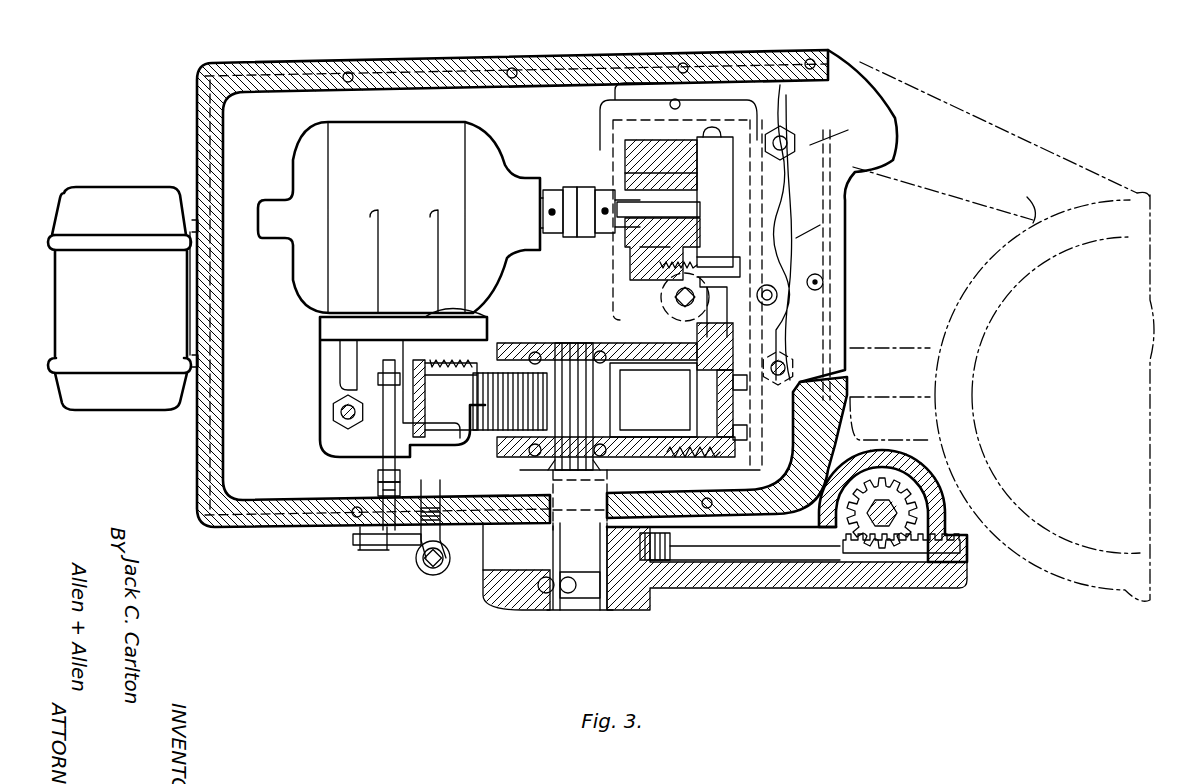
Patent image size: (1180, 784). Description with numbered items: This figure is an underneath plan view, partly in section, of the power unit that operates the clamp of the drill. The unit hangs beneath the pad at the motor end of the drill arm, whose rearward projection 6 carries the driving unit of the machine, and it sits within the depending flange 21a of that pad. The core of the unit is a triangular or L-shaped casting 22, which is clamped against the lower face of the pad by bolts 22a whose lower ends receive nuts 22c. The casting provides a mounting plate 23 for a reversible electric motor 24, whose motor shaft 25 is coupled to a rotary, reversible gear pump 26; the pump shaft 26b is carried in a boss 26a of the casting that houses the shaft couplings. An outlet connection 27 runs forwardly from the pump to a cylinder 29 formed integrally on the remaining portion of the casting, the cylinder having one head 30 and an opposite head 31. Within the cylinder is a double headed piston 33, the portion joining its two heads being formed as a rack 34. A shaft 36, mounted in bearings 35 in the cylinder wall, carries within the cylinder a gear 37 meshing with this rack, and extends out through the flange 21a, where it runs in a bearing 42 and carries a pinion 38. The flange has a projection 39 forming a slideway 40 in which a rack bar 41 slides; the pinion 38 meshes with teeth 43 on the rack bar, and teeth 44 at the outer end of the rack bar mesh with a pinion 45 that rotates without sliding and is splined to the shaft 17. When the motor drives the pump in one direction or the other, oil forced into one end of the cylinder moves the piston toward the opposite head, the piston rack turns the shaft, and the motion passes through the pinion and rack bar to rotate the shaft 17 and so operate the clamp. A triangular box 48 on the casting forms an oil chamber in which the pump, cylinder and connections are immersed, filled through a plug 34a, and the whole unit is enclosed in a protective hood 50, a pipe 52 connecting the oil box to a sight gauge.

The rearward projection 6 is at (855, 170).
The shaft 17 is at (884, 525).
The depending flange 21a is at (283, 533).
The L-shaped casting 22 is at (828, 178).
The bolts 22a is at (360, 462).
The nuts 22c is at (790, 143).
The mounting plate 23 is at (345, 327).
The reversible electric motor 24 is at (375, 155).
The motor shaft 25 is at (552, 205).
The gear pump 26 is at (710, 210).
The boss 26a is at (645, 150).
The pump shaft 26b is at (690, 208).
The outlet connection 27 is at (748, 298).
The cylinder 29 is at (690, 535).
The cylinder head 30 is at (640, 440).
The cylinder head 31 is at (400, 400).
The double headed piston 33 is at (612, 410).
The rack 34 is at (475, 530).
The plug 34a is at (433, 570).
The bearings 35 is at (535, 350).
The shaft 36 is at (700, 420).
The gear 37 is at (610, 393).
The pinion 38 is at (546, 593).
The projection 39 is at (840, 575).
The slideway 40 is at (515, 580).
The rack bar 41 is at (890, 462).
The bearing 42 is at (568, 598).
The teeth 43 is at (660, 600).
The teeth 44 is at (935, 552).
The pinion 45 is at (905, 487).
The triangular box 48 is at (735, 535).
The hood 50 is at (400, 550).
The pipe 52 is at (380, 460).